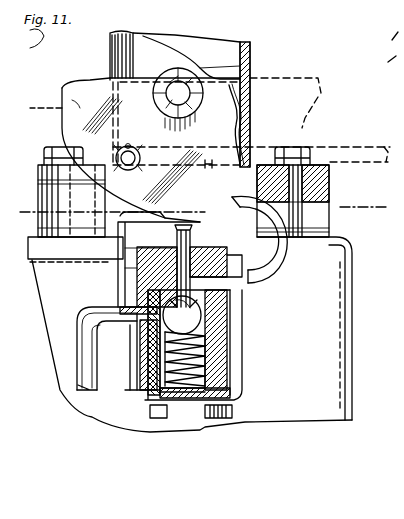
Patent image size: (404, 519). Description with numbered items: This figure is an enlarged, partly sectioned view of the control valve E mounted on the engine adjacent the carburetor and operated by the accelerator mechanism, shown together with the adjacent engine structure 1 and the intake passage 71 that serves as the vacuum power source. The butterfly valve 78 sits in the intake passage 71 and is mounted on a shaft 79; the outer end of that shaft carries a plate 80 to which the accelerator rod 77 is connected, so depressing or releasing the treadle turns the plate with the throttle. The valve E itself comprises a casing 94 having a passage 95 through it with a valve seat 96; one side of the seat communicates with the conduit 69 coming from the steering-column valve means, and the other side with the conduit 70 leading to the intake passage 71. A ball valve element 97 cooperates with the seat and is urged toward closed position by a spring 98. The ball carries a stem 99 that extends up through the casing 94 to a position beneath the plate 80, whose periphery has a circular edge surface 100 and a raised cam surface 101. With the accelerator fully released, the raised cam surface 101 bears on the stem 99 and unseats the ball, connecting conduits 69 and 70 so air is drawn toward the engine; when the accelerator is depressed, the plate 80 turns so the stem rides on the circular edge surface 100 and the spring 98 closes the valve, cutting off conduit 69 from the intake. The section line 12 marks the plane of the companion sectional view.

The housing body 1 is at (368, 299).
The section line 12 is at (28, 219).
The conduit 69 is at (80, 318).
The conduit 70 is at (270, 278).
The intake passage 71 is at (227, 110).
The rod 77 is at (249, 122).
The butterfly valve 78 is at (222, 82).
The shaft 79 is at (184, 90).
The plate 80 is at (62, 96).
The casing 94 is at (230, 334).
The passage 95 is at (230, 302).
The valve seat 96 is at (130, 286).
The ball valve element 97 is at (131, 344).
The spring 98 is at (230, 368).
The stem 99 is at (130, 265).
The circular edge surface 100 is at (64, 134).
The raised cam surface 101 is at (196, 218).
The control valve E is at (259, 325).